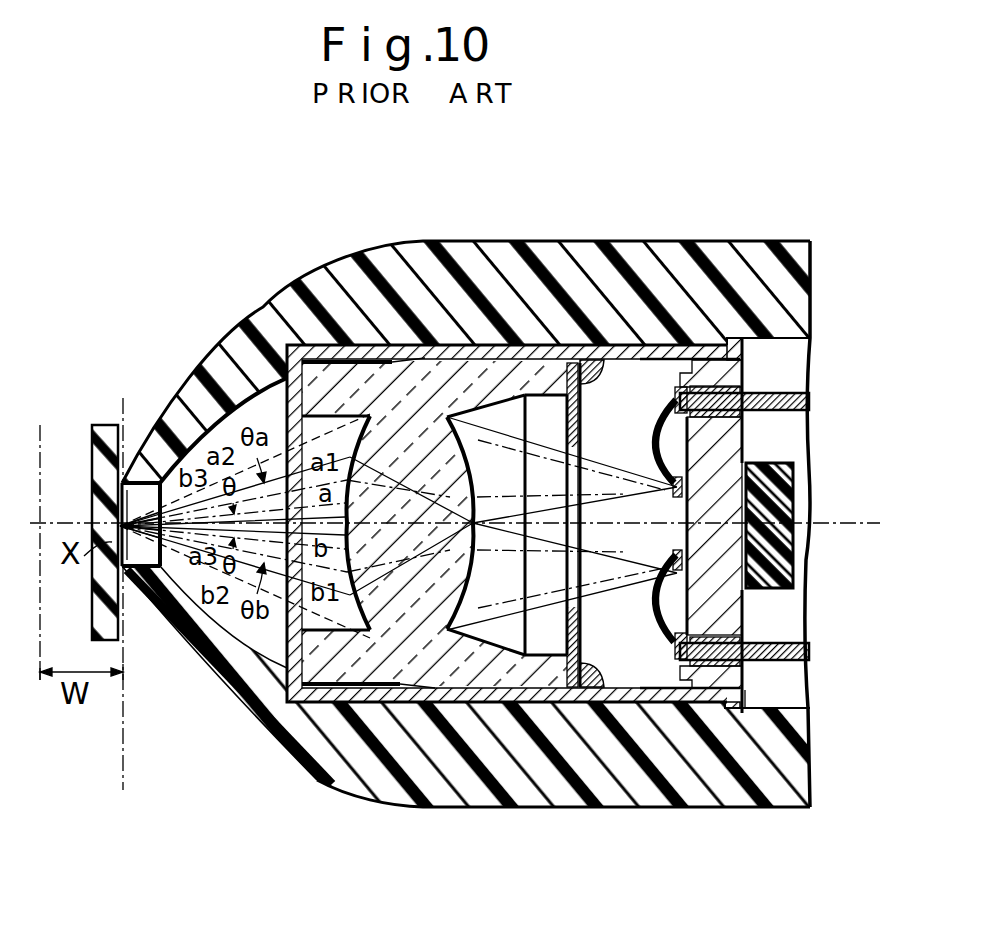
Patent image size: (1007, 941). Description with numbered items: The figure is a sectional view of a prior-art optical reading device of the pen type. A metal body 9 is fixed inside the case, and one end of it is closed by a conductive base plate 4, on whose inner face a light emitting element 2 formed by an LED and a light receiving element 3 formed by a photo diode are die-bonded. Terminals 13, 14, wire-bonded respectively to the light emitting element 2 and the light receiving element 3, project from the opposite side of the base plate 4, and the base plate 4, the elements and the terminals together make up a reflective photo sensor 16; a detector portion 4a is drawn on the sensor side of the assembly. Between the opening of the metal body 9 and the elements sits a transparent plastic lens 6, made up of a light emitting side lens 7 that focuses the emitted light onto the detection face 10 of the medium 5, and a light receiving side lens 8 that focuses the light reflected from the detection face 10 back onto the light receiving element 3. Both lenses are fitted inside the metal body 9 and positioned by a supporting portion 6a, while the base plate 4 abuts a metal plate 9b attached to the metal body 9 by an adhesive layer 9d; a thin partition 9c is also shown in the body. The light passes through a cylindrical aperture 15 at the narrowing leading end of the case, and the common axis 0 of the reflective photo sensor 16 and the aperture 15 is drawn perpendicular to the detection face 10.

The axis 0 is at (459, 523).
The light emitting element 2 is at (658, 477).
The light receiving element 3 is at (658, 568).
The base plate 4 is at (735, 440).
The detector element 4a is at (795, 497).
The medium 5 is at (97, 427).
The lens 6 is at (435, 513).
The supporting portion 6a is at (402, 665).
The light emitting side lens 7 is at (453, 476).
The light receiving side lens 8 is at (453, 592).
The metal body 9 is at (481, 346).
The metal plate 9b is at (598, 667).
The transparent partition plate 9c is at (582, 537).
The adhesive layer 9d is at (598, 379).
The detection face 10 is at (121, 479).
The terminal 13 is at (783, 388).
The terminal 14 is at (782, 641).
The aperture 15 is at (145, 570).
The reflective photo sensor 16 is at (755, 683).